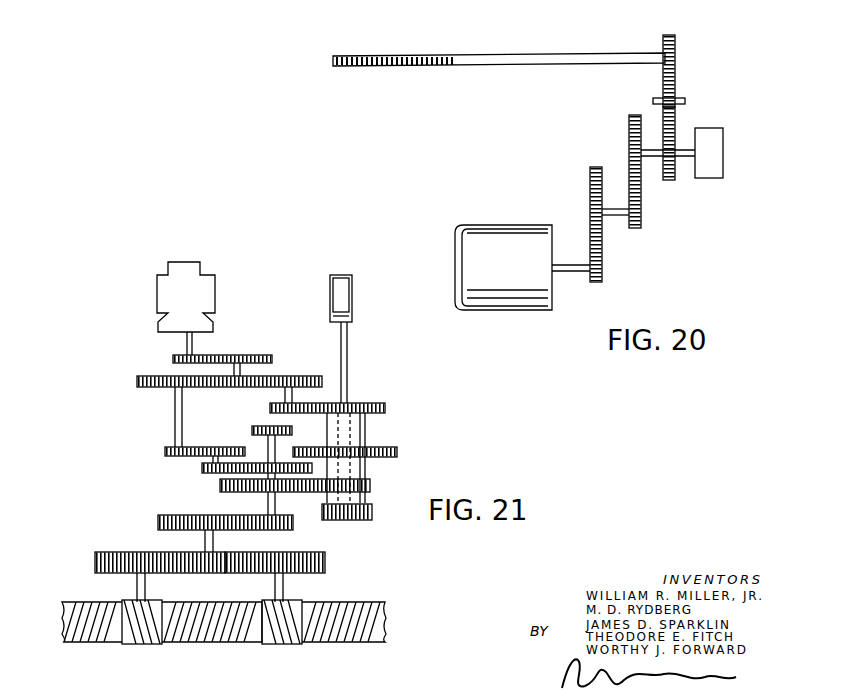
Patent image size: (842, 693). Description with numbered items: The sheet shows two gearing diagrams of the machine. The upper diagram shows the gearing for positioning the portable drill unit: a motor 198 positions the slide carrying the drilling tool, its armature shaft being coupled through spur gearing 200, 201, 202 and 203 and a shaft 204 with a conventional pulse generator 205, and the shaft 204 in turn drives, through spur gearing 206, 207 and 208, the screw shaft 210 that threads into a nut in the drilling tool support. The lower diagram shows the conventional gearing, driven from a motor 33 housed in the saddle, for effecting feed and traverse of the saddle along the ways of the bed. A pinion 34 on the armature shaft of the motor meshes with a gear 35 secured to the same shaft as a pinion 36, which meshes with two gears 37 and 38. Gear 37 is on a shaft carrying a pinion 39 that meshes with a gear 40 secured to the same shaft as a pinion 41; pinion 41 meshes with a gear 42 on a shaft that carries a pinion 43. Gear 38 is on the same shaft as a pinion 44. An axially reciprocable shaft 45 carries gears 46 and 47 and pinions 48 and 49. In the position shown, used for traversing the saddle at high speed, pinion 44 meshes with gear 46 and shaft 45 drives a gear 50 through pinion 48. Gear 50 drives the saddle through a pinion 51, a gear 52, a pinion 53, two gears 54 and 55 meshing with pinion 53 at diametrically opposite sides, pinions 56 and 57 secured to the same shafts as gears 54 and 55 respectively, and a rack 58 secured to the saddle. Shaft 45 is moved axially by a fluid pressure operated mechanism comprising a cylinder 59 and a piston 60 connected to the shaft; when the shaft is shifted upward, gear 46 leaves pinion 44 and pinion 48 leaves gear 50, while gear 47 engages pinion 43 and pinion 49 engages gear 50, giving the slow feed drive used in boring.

In FIG. 20, the motor 198 is at (521, 310).
In FIG. 20, the spur gearing 200 is at (602, 273).
In FIG. 20, the spur gearing 201 is at (590, 194).
In FIG. 20, the spur gearing 202 is at (641, 222).
In FIG. 20, the spur gearing 203 is at (629, 133).
In FIG. 20, the shaft 204 is at (655, 157).
In FIG. 20, the pulse generator 205 is at (723, 153).
In FIG. 20, the spur gearing 206 is at (676, 137).
In FIG. 20, the spur gearing 207 is at (676, 97).
In FIG. 20, the spur gearing 208 is at (676, 48).
In FIG. 20, the screw shaft 210 is at (563, 55).
In FIG. 21, the motor 33 is at (215, 289).
In FIG. 21, the pinion 34 is at (175, 357).
In FIG. 21, the gear 35 is at (270, 356).
In FIG. 21, the pinion 36 is at (240, 384).
In FIG. 21, the gear 37 is at (140, 388).
In FIG. 21, the gear 38 is at (310, 377).
In FIG. 21, the pinion 39 is at (165, 452).
In FIG. 21, the gear 40 is at (225, 446).
In FIG. 21, the pinion 41 is at (208, 476).
In FIG. 21, the gear 42 is at (281, 462).
In FIG. 21, the pinion 43 is at (252, 429).
In FIG. 21, the pinion 44 is at (272, 406).
In FIG. 21, the axially reciprocable shaft 45 is at (362, 434).
In FIG. 21, the gear 46 is at (385, 405).
In FIG. 21, the gear 47 is at (397, 452).
In FIG. 21, the pinion 48 is at (370, 486).
In FIG. 21, the pinion 49 is at (372, 518).
In FIG. 21, the gear 50 is at (223, 493).
In FIG. 21, the pinion 51 is at (293, 528).
In FIG. 21, the gear 52 is at (158, 523).
In FIG. 21, the pinion 53 is at (216, 574).
In FIG. 21, the gear 54 is at (95, 563).
In FIG. 21, the gear 55 is at (294, 562).
In FIG. 21, the pinion 56 is at (118, 600).
In FIG. 21, the pinion 57 is at (302, 600).
In FIG. 21, the rack 58 is at (372, 597).
In FIG. 21, the cylinder 59 is at (352, 300).
In FIG. 21, the piston 60 is at (341, 320).